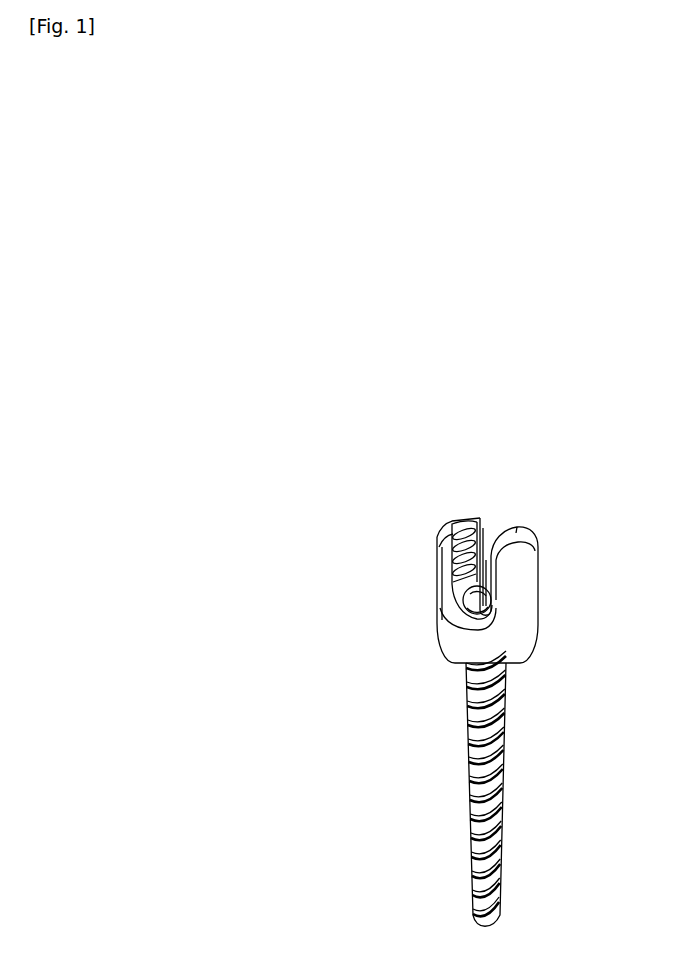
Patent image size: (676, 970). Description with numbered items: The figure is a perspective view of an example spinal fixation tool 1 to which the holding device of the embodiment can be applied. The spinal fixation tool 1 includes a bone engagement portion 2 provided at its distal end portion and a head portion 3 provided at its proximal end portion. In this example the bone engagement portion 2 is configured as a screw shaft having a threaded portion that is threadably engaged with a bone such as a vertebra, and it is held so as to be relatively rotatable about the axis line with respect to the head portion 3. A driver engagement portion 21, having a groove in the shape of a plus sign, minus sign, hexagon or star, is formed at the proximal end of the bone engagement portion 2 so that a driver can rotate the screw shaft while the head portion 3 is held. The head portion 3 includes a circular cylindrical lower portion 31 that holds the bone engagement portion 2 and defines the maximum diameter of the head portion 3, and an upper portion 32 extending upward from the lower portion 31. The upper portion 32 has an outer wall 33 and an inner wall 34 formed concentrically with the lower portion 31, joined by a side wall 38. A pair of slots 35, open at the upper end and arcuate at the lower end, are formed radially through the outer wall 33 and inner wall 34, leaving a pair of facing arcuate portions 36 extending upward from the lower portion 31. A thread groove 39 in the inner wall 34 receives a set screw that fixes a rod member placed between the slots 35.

The spinal fixation tool 1 is at (500, 348).
The bone engagement portion 2 is at (493, 763).
The driver engagement portion 21 is at (464, 596).
The head portion 3 is at (407, 512).
The lower portion 31 is at (541, 643).
The upper portion 32 is at (555, 528).
The outer wall 33 is at (437, 565).
The inner wall 34 is at (480, 521).
The slots 35 is at (465, 585).
The arcuate portions 36 is at (435, 553).
The side wall 38 is at (435, 578).
The thread groove 39 is at (457, 520).